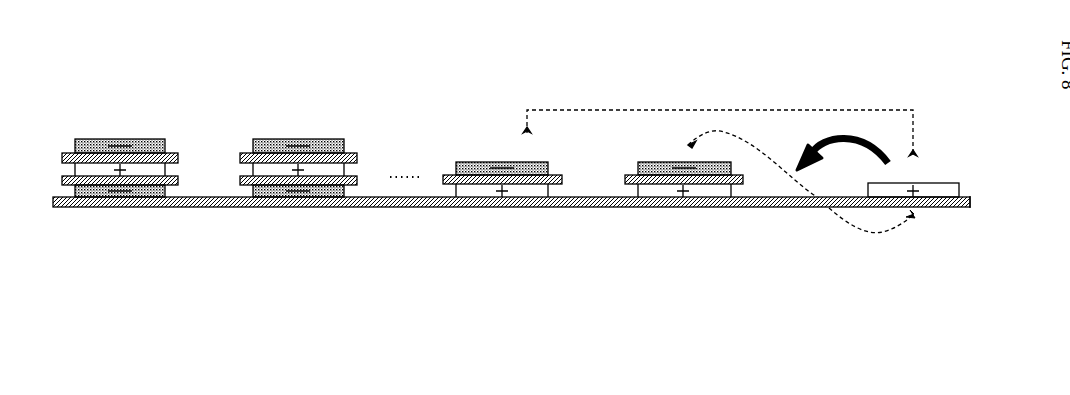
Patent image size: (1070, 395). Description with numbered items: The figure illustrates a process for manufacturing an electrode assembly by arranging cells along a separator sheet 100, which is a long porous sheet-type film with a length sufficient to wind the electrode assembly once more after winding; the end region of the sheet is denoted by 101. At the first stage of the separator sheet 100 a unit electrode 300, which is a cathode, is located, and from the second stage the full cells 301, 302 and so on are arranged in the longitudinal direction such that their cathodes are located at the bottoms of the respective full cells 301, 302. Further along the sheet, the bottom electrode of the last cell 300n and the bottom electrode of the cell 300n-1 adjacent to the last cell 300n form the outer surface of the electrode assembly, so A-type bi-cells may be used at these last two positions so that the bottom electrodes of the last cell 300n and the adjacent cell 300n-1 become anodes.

The separator sheet 100 is at (217, 208).
The substrate edge 101 is at (979, 209).
The unit electrode 300 is at (937, 182).
The full cell 301 is at (717, 208).
The full cell 302 is at (505, 160).
The cell adjacent to the last cell 300n-1 is at (297, 137).
The last cell 300n is at (117, 137).